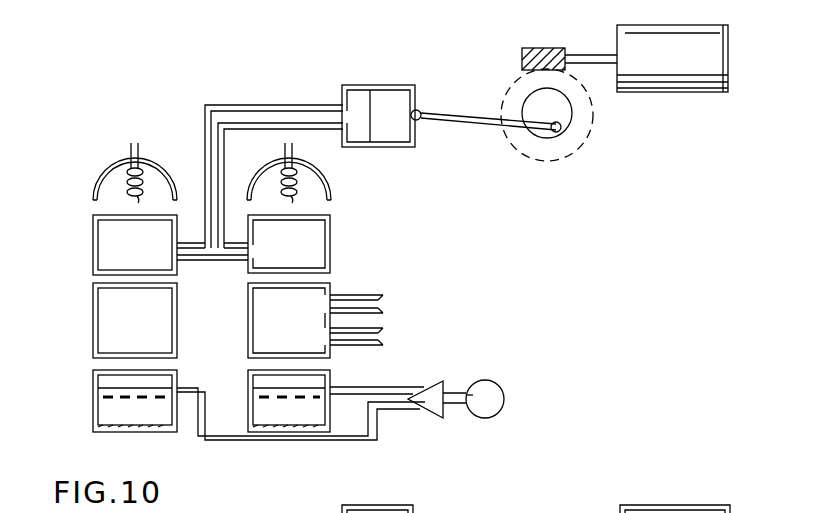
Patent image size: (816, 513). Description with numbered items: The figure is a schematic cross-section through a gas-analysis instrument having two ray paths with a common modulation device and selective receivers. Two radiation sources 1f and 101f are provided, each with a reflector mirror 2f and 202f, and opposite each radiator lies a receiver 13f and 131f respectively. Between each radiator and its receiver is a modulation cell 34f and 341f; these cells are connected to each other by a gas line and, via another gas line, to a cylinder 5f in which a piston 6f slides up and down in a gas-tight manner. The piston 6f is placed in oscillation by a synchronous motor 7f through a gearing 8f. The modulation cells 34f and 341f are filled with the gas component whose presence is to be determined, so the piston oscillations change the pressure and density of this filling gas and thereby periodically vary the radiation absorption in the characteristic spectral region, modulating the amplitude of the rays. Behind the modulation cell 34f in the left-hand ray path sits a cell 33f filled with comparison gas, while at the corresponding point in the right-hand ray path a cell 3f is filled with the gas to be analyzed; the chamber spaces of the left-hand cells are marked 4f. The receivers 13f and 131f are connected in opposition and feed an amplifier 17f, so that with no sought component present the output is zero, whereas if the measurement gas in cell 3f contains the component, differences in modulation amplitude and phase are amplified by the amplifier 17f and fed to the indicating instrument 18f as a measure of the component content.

The radiation source 1f is at (141, 170).
The reflector mirror 2f is at (118, 166).
The cell 3f is at (262, 328).
The chamber 4f is at (136, 222).
The cylinder 5f is at (354, 100).
The piston 6f is at (391, 97).
The synchronous motor 7f is at (673, 84).
The gearing 8f is at (565, 68).
The receiver 13f is at (130, 416).
The amplifier 17f is at (421, 392).
The indicating instrument 18f is at (485, 391).
The cell 33f is at (100, 328).
The modulation cell 34f is at (100, 245).
The radiation source 101f is at (300, 178).
The receiver 131f is at (290, 416).
The reflector mirror 202f is at (330, 193).
The modulation cell 341f is at (318, 244).